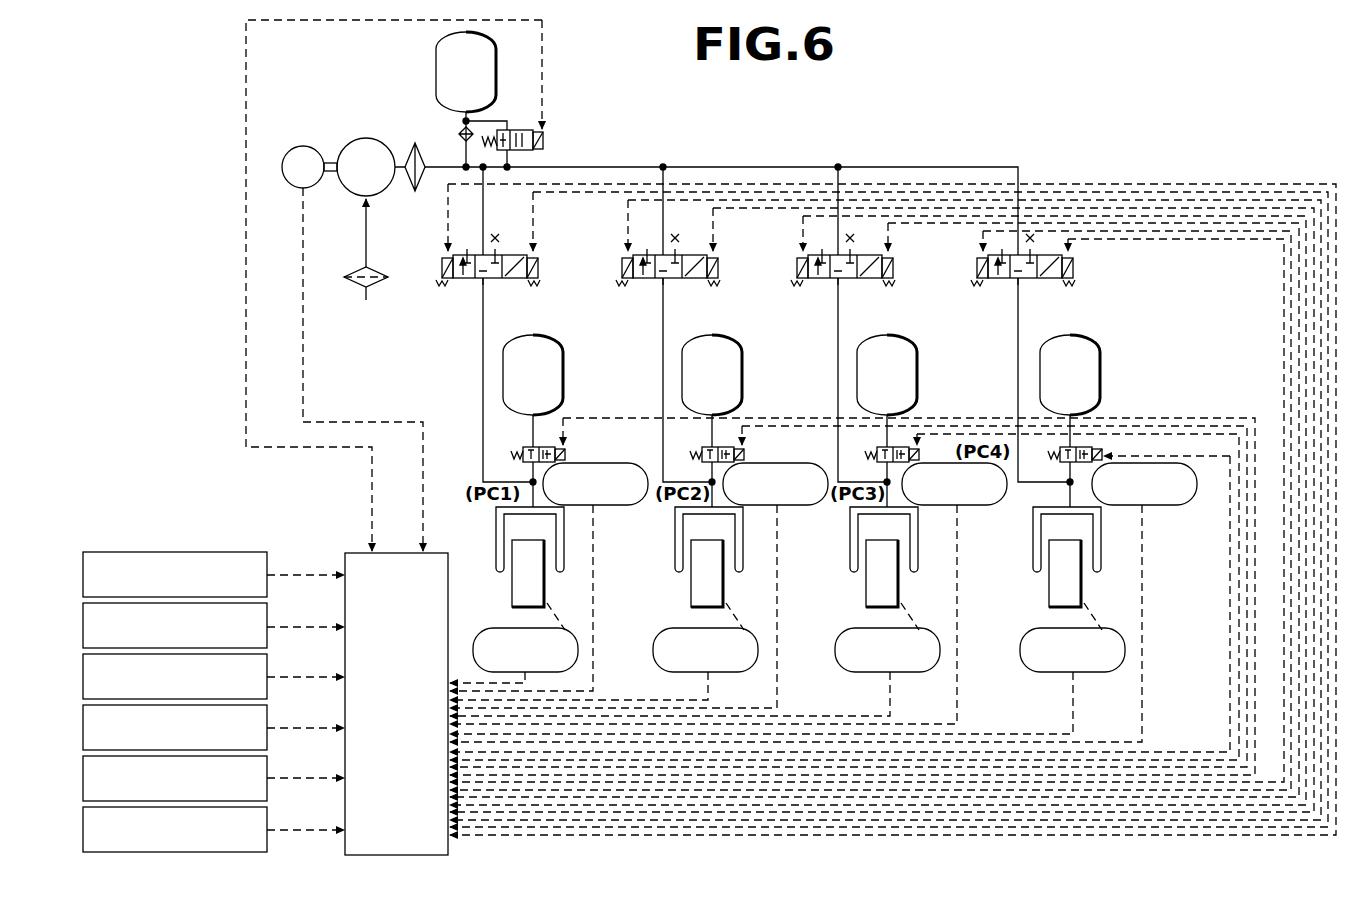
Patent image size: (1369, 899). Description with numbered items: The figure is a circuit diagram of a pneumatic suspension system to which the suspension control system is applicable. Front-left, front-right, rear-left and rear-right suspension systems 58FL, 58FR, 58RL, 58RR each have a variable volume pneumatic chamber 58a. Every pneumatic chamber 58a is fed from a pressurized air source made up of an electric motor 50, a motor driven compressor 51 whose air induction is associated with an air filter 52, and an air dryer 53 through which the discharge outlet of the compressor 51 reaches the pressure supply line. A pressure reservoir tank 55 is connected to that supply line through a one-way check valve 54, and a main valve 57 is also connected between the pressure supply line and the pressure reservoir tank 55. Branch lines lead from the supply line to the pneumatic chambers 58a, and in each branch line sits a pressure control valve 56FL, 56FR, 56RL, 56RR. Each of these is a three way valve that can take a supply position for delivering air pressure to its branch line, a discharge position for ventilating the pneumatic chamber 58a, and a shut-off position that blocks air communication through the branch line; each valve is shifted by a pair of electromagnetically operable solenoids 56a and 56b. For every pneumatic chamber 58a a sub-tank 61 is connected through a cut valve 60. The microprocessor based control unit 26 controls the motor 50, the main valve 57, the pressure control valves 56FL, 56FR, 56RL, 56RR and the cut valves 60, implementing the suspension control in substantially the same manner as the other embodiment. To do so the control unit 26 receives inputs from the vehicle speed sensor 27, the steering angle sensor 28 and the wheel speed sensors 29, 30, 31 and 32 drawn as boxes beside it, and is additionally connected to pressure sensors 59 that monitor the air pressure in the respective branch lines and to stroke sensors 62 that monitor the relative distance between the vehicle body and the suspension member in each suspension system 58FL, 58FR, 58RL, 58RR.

The control unit 26 is at (355, 553).
The vehicle speed sensor 27 is at (83, 583).
The steering angle sensor 28 is at (83, 635).
The wheel speed sensor 29 is at (83, 686).
The wheel speed sensor 30 is at (83, 737).
The wheel speed sensor 31 is at (83, 788).
The wheel speed sensor 32 is at (83, 839).
The electric motor 50 is at (303, 146).
The motor driven compressor 51 is at (366, 138).
The air filter 52 is at (357, 284).
The air dryer 53 is at (411, 185).
The one-way check valve 54 is at (460, 131).
The pressure reservoir tank 55 is at (436, 62).
The pressure control valve 56FL is at (488, 280).
The pressure control valve 56FR is at (737, 328).
The pressure control valve 56RL is at (912, 328).
The pressure control valve 56RR is at (1105, 328).
The solenoid 56a is at (444, 264).
The solenoid 56b is at (538, 268).
The main valve 57 is at (537, 140).
The front-left suspension system 58FL is at (497, 555).
The front-right suspension system 58FR is at (668, 548).
The rear-left suspension system 58RL is at (845, 552).
The rear-right suspension system 58RR is at (1028, 552).
The variable volume pneumatic chamber 58a is at (515, 520).
The pressure sensor 59 is at (640, 505).
The cut valve 60 is at (522, 450).
The sub-tank 61 is at (563, 347).
The stroke sensor 62 is at (495, 629).